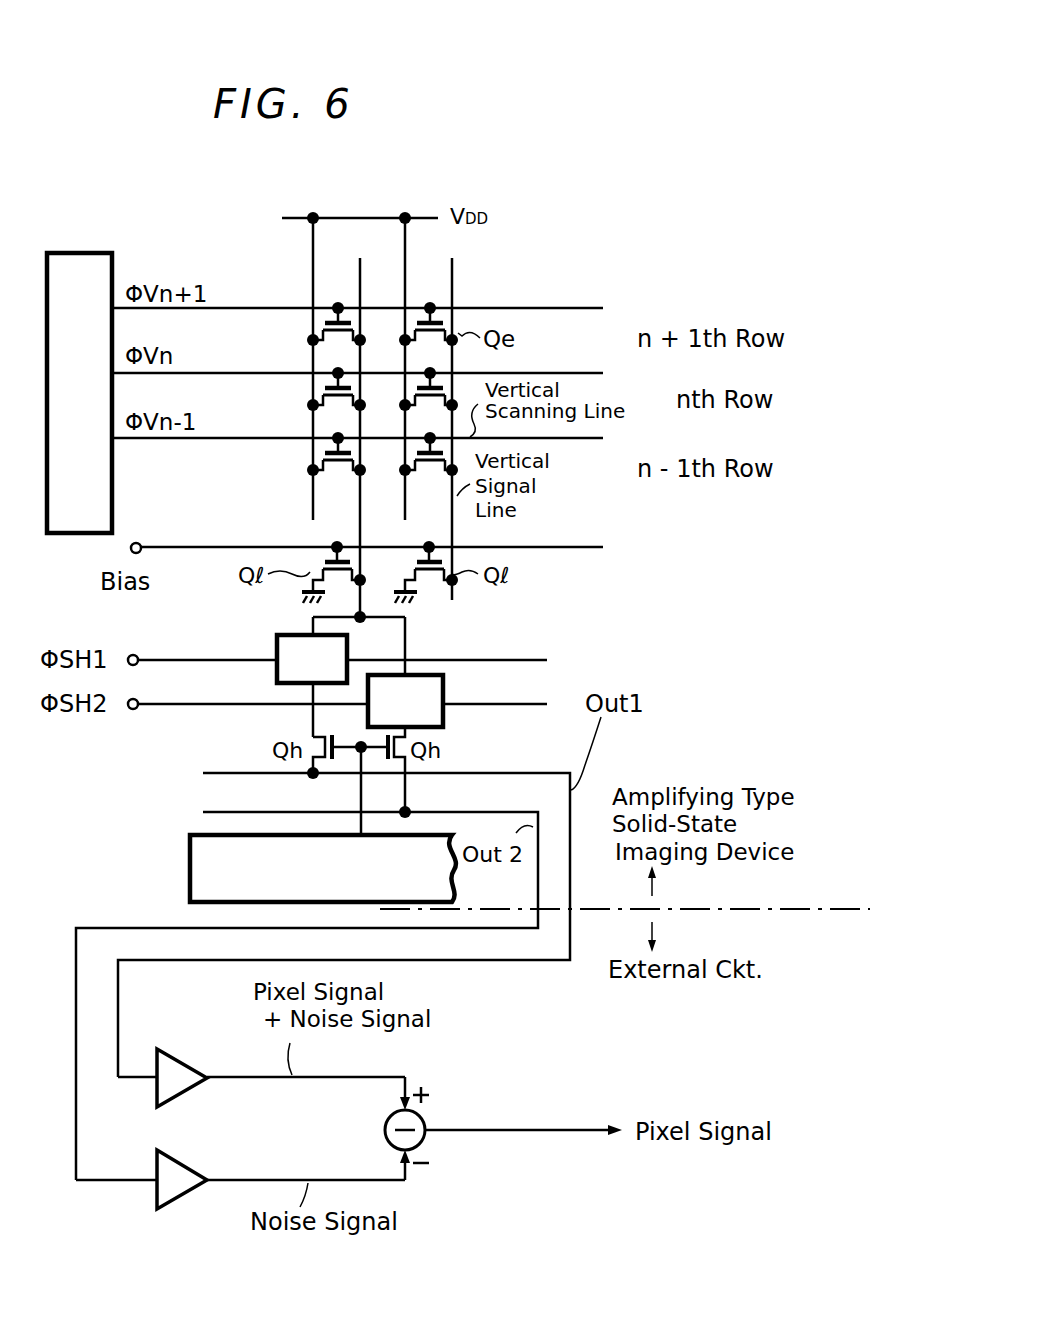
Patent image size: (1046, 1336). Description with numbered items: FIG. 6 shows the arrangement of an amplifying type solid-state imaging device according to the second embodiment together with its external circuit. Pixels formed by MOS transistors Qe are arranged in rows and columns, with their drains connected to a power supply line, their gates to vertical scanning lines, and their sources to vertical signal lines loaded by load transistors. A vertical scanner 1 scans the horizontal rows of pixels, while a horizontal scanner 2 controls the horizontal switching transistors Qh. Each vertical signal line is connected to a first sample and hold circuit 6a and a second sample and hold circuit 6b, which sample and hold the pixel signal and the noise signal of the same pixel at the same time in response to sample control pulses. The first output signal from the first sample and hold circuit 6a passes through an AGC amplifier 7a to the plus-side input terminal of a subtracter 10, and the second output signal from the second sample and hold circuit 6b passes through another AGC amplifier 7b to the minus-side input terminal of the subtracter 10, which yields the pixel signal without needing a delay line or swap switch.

The vertical scanner 1 is at (76, 252).
The horizontal scanner 2 is at (190, 870).
The first sample and hold circuit 6a is at (277, 636).
The second sample and hold circuit 6b is at (443, 682).
The AGC amplifier 7a is at (178, 1060).
The AGC amplifier 7b is at (180, 1200).
The subtracter 10 is at (385, 1130).